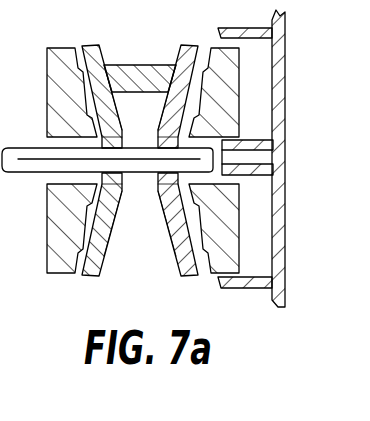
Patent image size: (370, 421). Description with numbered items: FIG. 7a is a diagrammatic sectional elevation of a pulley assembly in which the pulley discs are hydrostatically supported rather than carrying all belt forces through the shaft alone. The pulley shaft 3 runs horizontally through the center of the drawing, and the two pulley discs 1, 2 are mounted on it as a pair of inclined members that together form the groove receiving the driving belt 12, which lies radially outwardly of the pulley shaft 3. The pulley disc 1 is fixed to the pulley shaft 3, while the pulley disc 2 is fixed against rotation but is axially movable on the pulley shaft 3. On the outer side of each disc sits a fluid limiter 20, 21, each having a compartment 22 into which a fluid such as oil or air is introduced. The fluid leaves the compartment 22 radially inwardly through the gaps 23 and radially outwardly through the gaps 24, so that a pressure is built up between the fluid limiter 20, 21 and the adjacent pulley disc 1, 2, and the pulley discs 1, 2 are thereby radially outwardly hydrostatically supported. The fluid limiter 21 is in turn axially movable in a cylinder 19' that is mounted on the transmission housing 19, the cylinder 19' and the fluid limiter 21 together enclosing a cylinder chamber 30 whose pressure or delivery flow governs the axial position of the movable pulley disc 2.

The pulley disc 1 is at (88, 46).
The pulley disc 2 is at (181, 45).
The pulley shaft 3 is at (20, 207).
The driving belt 12 is at (136, 70).
The transmission housing 19 is at (268, 158).
The cylinder 19' is at (245, 296).
The fluid limiter 20 is at (54, 92).
The fluid limiter 21 is at (233, 72).
The compartment 22 is at (172, 104).
The gap 23 is at (82, 48).
The gap 24 is at (181, 125).
The cylinder chamber 30 is at (257, 102).